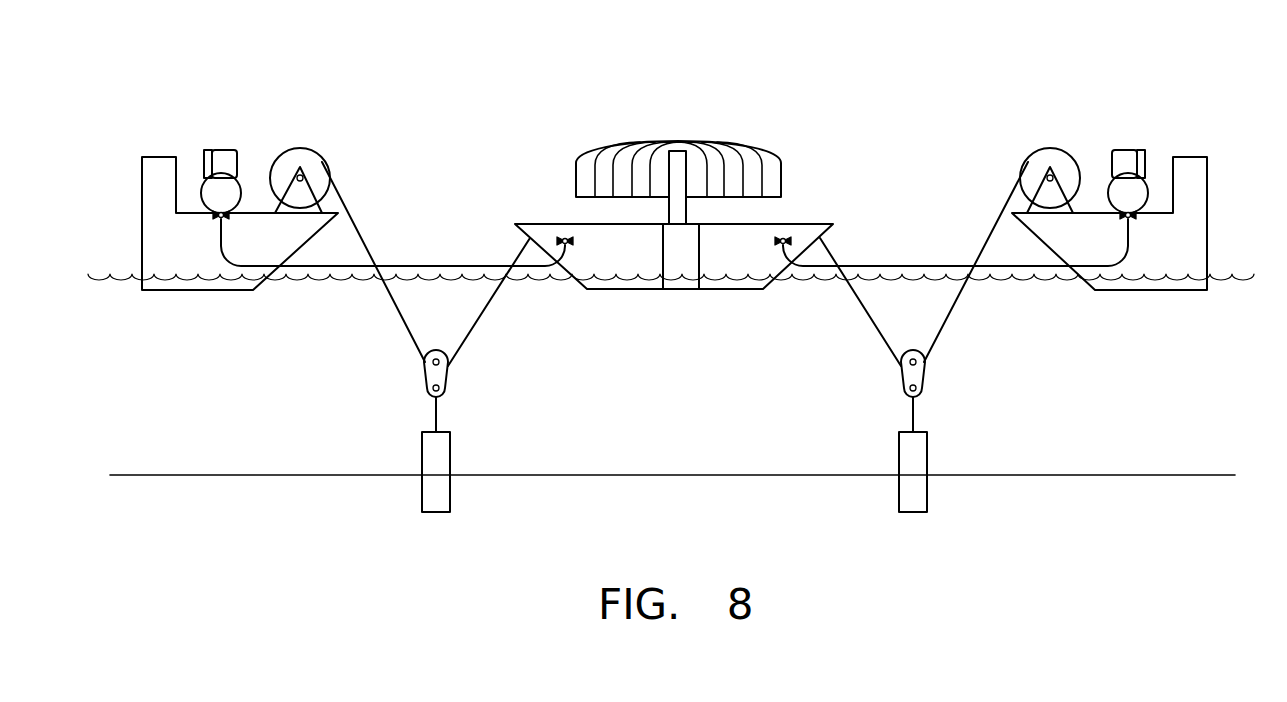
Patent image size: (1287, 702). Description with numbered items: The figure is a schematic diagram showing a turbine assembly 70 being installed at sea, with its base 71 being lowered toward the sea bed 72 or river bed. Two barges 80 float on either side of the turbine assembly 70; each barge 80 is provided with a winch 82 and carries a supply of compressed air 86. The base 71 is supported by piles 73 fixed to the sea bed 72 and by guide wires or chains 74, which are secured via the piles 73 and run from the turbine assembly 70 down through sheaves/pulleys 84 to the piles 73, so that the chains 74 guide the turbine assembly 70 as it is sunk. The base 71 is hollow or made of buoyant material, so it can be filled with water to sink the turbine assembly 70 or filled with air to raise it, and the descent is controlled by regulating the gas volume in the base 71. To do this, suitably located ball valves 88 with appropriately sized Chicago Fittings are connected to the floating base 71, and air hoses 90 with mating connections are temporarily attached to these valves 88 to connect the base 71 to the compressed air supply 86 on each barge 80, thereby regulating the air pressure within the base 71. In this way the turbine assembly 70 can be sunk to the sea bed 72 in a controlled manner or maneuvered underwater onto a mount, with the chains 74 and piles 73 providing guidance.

The turbine assembly 70 is at (740, 130).
The base 71 is at (752, 238).
The sea bed 72 is at (1068, 493).
The piles 73 is at (422, 450).
The chains 74 is at (400, 329).
The barges 80 is at (141, 185).
The winches 82 is at (318, 177).
The sheaves/pulleys 84 is at (428, 377).
The compressed air supply 86 is at (221, 193).
The ball valves 88 is at (558, 237).
The air hoses 90 is at (460, 266).